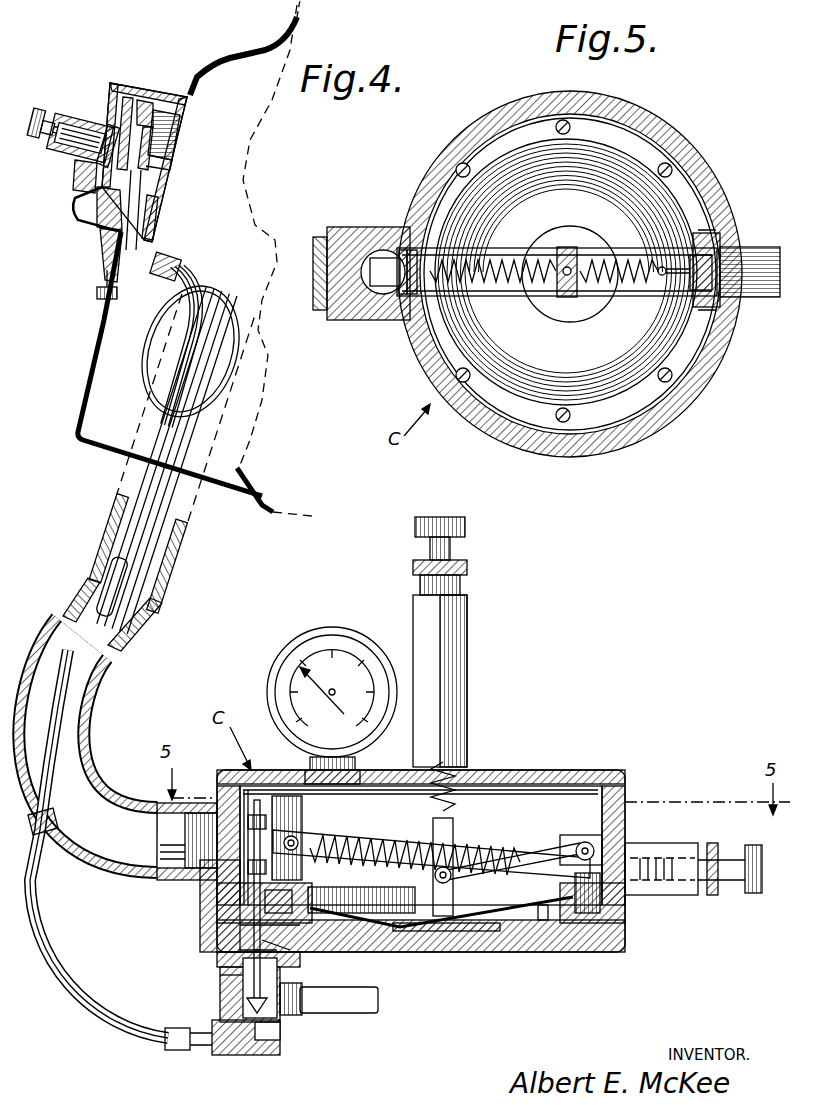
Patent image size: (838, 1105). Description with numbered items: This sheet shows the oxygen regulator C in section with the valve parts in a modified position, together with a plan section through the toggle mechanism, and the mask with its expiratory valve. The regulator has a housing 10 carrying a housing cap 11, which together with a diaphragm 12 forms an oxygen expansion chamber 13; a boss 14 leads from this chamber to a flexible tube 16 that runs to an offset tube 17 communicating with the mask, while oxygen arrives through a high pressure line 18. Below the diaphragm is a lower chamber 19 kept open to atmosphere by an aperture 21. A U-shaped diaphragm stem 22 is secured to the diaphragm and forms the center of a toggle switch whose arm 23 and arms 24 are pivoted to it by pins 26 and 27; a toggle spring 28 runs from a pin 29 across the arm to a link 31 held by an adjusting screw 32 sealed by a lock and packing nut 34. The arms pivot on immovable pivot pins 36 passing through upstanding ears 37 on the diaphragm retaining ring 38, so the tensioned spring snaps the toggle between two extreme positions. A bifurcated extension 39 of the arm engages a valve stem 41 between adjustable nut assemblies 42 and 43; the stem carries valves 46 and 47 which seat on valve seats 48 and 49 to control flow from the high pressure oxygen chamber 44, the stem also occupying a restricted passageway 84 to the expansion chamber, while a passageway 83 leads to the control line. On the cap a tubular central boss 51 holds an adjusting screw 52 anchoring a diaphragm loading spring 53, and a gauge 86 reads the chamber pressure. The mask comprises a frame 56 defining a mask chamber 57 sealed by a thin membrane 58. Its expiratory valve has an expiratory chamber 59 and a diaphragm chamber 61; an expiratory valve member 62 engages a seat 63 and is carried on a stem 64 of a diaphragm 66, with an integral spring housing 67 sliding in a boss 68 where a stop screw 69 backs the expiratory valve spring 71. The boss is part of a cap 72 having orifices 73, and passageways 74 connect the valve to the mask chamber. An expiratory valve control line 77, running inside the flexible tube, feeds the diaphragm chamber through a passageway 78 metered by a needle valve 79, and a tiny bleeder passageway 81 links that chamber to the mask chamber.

In FIG. 5, the housing 10 is at (662, 142).
In FIG. 4, the housing 10 is at (598, 952).
In FIG. 4, the housing cap 11 is at (537, 770).
In FIG. 5, the diaphragm 12 is at (542, 386).
In FIG. 4, the diaphragm 12 is at (508, 922).
In FIG. 4, the oxygen expansion chamber 13 is at (566, 800).
In FIG. 4, the boss 14 is at (165, 880).
In FIG. 4, the flexible tube 16 is at (88, 742).
In FIG. 4, the offset tube 17 is at (135, 478).
In FIG. 4, the high pressure line 18 is at (380, 1016).
In FIG. 4, the lower chamber 19 is at (407, 932).
In FIG. 4, the aperture 21 is at (542, 944).
In FIG. 4, the diaphragm stem 22 is at (446, 843).
In FIG. 5, the toggle arm 23 is at (484, 297).
In FIG. 4, the toggle arm 23 is at (383, 867).
In FIG. 5, the toggle arms 24 is at (632, 250).
In FIG. 4, the toggle arms 24 is at (546, 850).
In FIG. 5, the pin 26 is at (566, 256).
In FIG. 5, the pin 27 is at (566, 296).
In FIG. 4, the pin 27 is at (450, 880).
In FIG. 5, the toggle spring 28 is at (445, 265).
In FIG. 4, the toggle spring 28 is at (385, 846).
In FIG. 5, the pin 29 is at (417, 250).
In FIG. 5, the link 31 is at (688, 287).
In FIG. 4, the adjusting screw 32 is at (660, 874).
In FIG. 4, the lock and packing nut 34 is at (715, 896).
In FIG. 5, the pivot pins 36 is at (726, 262).
In FIG. 4, the pivot pins 36 is at (601, 866).
In FIG. 5, the upstanding ears 37 is at (712, 240).
In FIG. 4, the upstanding ears 37 is at (604, 818).
In FIG. 5, the diaphragm retaining ring 38 is at (650, 402).
In FIG. 4, the diaphragm retaining ring 38 is at (603, 902).
In FIG. 5, the bifurcated extension 39 is at (380, 294).
In FIG. 4, the bifurcated extension 39 is at (250, 836).
In FIG. 4, the valve stem 41 is at (252, 986).
In FIG. 5, the adjustable nut assembly 42 is at (404, 250).
In FIG. 4, the adjustable nut assembly 42 is at (262, 818).
In FIG. 4, the adjustable nut assembly 43 is at (213, 888).
In FIG. 4, the high pressure oxygen chamber 44 is at (222, 974).
In FIG. 4, the valve 46 is at (250, 948).
In FIG. 4, the valve 47 is at (232, 1008).
In FIG. 4, the valve seat 48 is at (278, 945).
In FIG. 4, the valve seat 49 is at (300, 1016).
In FIG. 4, the tubular central boss 51 is at (467, 610).
In FIG. 4, the adjusting screw 52 is at (468, 558).
In FIG. 4, the diaphragm loading spring 53 is at (448, 772).
In FIG. 4, the frame 56 is at (102, 357).
In FIG. 4, the mask chamber 57 is at (248, 56).
In FIG. 4, the thin membrane 58 is at (240, 468).
In FIG. 4, the expiratory chamber 59 is at (148, 102).
In FIG. 4, the diaphragm chamber 61 is at (178, 148).
In FIG. 4, the expiratory valve member 62 is at (102, 122).
In FIG. 4, the seat 63 is at (128, 97).
In FIG. 4, the stem 64 is at (74, 196).
In FIG. 4, the diaphragm 66 is at (172, 166).
In FIG. 4, the expiratory valve spring housing 67 is at (80, 170).
In FIG. 4, the boss 68 is at (62, 118).
In FIG. 4, the expiratory valve stop screw 69 is at (38, 142).
In FIG. 4, the expiratory valve spring 71 is at (52, 150).
In FIG. 4, the cap 72 is at (100, 225).
In FIG. 4, the orifices 73 is at (74, 215).
In FIG. 4, the passageways 74 is at (190, 118).
In FIG. 4, the expiratory valve control line 77 is at (180, 284).
In FIG. 4, the passageway 78 is at (170, 264).
In FIG. 4, the adjustable needle valve 79 is at (98, 294).
In FIG. 4, the bleeder passageway 81 is at (156, 198).
In FIG. 4, the passageway 83 is at (252, 1040).
In FIG. 4, the passageway 84 is at (250, 923).
In FIG. 4, the gauge 86 is at (302, 652).